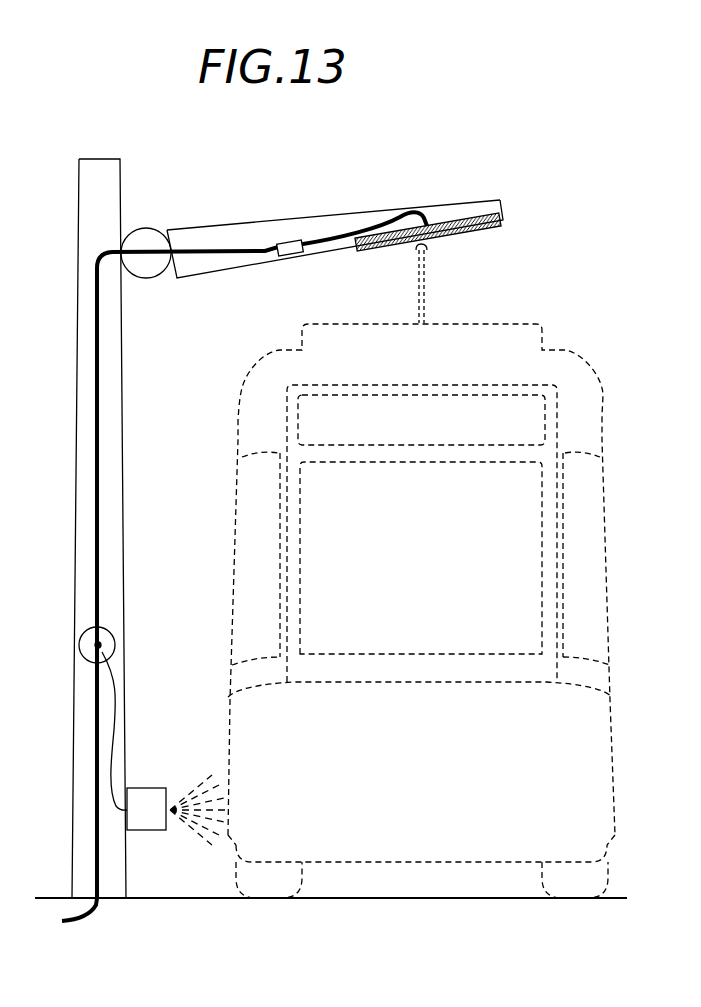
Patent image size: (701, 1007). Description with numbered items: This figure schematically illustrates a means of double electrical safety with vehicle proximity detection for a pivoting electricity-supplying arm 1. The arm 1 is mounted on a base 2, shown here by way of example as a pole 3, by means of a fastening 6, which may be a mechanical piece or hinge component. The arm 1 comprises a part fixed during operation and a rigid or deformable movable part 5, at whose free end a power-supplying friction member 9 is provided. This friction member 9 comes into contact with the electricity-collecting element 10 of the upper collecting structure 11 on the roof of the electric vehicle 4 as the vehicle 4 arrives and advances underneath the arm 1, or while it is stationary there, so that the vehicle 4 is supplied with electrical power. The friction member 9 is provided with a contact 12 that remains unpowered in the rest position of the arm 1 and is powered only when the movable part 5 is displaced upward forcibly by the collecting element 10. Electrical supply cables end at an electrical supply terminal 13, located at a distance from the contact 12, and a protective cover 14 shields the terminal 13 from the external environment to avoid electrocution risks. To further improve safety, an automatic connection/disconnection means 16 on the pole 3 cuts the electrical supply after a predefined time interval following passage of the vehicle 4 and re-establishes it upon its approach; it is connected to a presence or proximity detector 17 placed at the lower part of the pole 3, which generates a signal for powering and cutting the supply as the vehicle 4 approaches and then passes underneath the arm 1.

The pivoting electricity-supplying arm 1 is at (344, 206).
The base 2 is at (145, 528).
The pole 3 is at (128, 533).
The electric vehicle 4 is at (630, 382).
The movable part 5 is at (340, 196).
The fastening 6 is at (150, 222).
The friction member 9 is at (470, 231).
The electricity-collecting element 10 is at (426, 248).
The upper collecting structure 11 is at (404, 285).
The contact 12 is at (291, 257).
The electrical supply terminal 13 is at (292, 242).
The protective cover 14 is at (265, 222).
The automatic connection/disconnection means 16 is at (113, 625).
The presence or proximity detector 17 is at (152, 760).